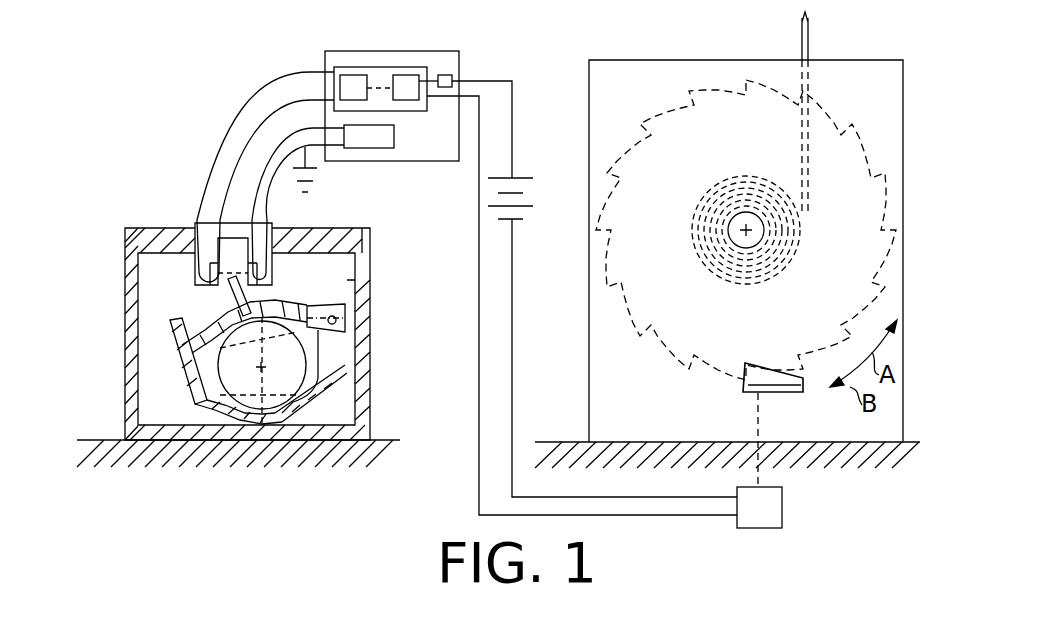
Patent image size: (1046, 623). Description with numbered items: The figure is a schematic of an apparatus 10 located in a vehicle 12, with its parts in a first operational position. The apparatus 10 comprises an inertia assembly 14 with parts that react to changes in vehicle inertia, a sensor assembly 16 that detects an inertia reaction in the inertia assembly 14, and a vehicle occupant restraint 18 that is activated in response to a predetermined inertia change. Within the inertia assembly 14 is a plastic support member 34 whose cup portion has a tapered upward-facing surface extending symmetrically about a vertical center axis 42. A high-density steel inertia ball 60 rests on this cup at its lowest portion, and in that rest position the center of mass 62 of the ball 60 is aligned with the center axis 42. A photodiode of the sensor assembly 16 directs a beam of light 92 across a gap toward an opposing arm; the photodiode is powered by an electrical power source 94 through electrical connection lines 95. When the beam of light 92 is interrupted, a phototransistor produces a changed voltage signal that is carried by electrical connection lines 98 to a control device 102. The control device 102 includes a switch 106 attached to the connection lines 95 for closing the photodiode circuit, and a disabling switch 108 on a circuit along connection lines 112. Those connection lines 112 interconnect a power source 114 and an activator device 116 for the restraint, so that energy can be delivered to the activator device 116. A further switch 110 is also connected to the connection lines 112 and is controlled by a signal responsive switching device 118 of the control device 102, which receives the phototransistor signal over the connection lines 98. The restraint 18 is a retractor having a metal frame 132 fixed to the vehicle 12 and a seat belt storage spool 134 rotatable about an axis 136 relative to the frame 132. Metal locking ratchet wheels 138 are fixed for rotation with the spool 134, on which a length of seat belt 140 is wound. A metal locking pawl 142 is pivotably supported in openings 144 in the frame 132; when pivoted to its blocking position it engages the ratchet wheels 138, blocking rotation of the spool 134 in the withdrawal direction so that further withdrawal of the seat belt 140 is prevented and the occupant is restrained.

The apparatus 10 is at (166, 121).
The vehicle 12 is at (388, 433).
The inertia assembly 14 is at (115, 256).
The sensor assembly 16 is at (182, 200).
The vehicle occupant restraint 18 is at (664, 45).
The support member 34 is at (182, 410).
The center axis 42 is at (262, 365).
The inertia ball 60 is at (295, 390).
The center of mass 62 is at (251, 382).
The beam of light 92 is at (233, 287).
The electrical power source 94 is at (317, 170).
The electrical connection lines 95 is at (273, 200).
The electrical connection lines 98 is at (265, 125).
The control device 102 is at (360, 38).
The switch 106 is at (378, 145).
The disabling switch 108 is at (445, 75).
The switch 110 is at (407, 77).
The connection lines 112 is at (510, 323).
The power source 114 is at (522, 178).
The activator device 116 is at (780, 507).
The signal responsive switching device 118 is at (350, 77).
The frame 132 is at (598, 343).
The seat belt storage spool 134 is at (730, 227).
The axis 136 is at (733, 243).
The locking ratchet wheels 138 is at (670, 103).
The seat belt 140 is at (808, 43).
The locking pawl 142 is at (763, 390).
The openings 144 is at (763, 373).